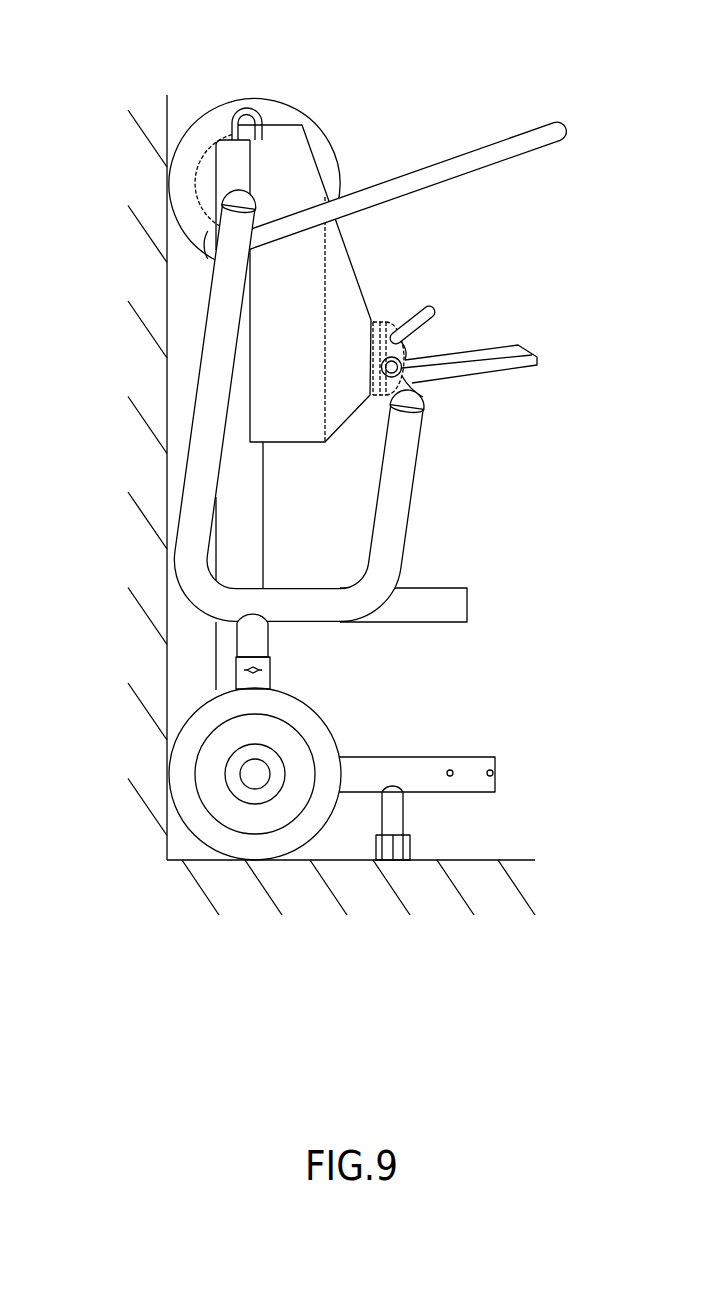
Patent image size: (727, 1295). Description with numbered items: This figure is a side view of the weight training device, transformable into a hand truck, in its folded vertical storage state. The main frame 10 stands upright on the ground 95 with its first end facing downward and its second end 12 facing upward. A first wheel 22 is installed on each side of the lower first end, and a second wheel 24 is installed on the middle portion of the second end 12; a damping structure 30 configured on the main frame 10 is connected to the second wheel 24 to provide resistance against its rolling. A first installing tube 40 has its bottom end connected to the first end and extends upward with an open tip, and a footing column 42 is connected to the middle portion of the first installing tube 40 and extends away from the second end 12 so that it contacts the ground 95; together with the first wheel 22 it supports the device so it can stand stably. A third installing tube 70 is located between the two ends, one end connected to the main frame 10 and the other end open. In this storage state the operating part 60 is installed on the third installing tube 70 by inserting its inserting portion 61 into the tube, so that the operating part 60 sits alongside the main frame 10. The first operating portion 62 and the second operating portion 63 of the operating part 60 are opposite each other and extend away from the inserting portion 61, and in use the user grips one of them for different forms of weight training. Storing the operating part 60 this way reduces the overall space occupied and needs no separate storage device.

The main frame 10 is at (217, 642).
The second end 12 is at (281, 124).
The first wheel 22 is at (185, 827).
The second wheel 24 is at (323, 137).
The damping structure 30 is at (367, 275).
The first installing tube 40 is at (433, 757).
The footing column 42 is at (403, 813).
The operating part 60 is at (299, 396).
The inserting portion 61 is at (270, 640).
The first operating portion 62 is at (193, 408).
The second operating portion 63 is at (405, 537).
The third installing tube 70 is at (270, 672).
The ground 95 is at (472, 859).